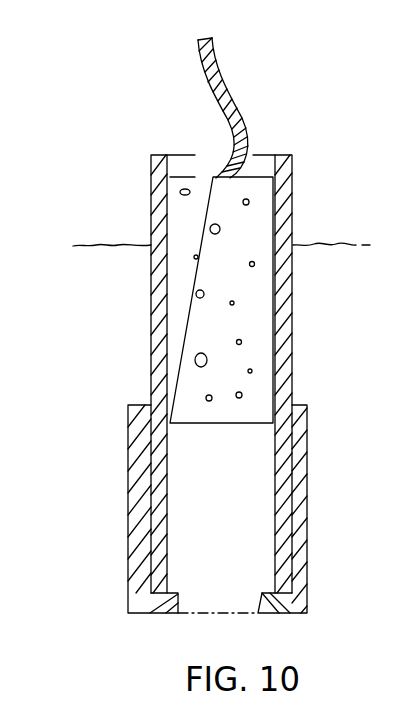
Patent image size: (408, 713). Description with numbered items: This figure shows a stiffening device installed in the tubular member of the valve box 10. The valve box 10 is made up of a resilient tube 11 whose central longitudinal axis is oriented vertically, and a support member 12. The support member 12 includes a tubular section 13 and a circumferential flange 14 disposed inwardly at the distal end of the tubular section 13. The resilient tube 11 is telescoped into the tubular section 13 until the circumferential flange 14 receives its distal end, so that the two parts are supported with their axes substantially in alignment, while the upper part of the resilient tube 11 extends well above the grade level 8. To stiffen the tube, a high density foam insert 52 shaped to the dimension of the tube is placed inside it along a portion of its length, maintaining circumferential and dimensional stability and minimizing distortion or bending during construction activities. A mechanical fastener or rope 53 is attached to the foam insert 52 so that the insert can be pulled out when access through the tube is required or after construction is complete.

The grade level 8 is at (326, 240).
The valve box 10 is at (98, 352).
The resilient tube 11 is at (286, 341).
The support member 12 is at (128, 515).
The tubular section 13 is at (305, 525).
The circumferential flange 14 is at (288, 608).
The high density foam insert 52 is at (180, 225).
The rope 53 is at (202, 65).